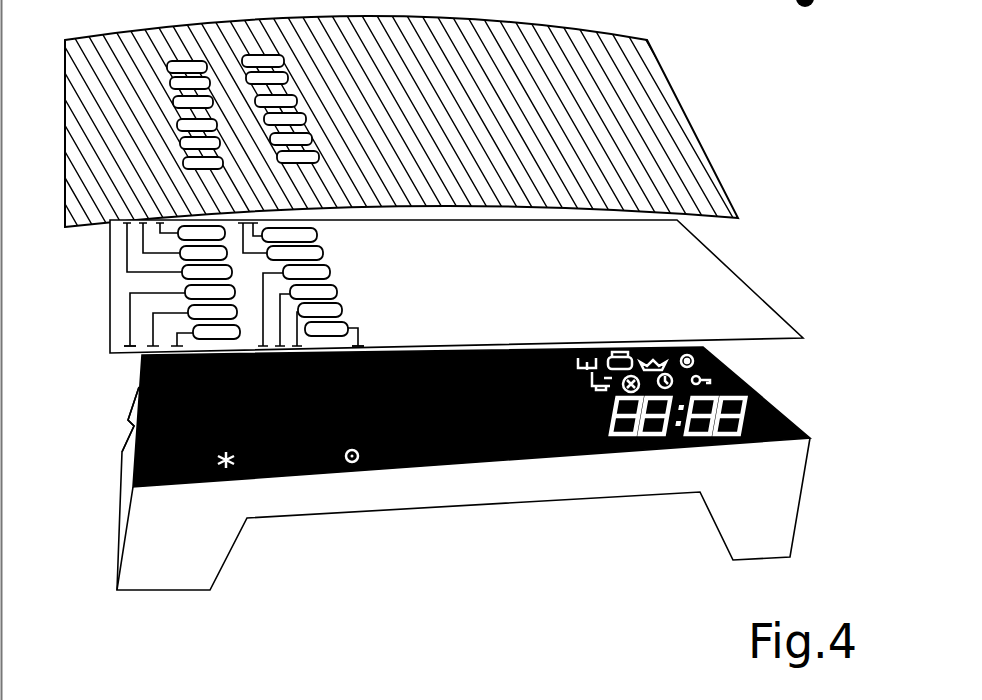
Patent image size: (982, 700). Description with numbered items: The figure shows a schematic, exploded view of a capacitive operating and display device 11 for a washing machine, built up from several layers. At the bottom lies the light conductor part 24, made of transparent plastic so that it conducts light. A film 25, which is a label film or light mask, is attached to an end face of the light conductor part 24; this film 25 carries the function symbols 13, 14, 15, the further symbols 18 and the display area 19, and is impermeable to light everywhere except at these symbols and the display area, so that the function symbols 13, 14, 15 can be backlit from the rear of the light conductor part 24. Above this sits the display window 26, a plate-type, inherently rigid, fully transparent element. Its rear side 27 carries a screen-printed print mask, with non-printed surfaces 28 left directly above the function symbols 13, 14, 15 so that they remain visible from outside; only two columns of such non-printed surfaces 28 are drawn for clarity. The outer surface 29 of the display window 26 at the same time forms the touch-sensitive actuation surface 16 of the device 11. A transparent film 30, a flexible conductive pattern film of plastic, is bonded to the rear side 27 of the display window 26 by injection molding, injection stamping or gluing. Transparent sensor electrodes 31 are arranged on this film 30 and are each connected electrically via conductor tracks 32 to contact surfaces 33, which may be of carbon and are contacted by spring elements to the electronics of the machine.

The capacitive operating and display device 11 is at (495, 401).
The function symbol 13 is at (229, 490).
The function symbol 14 is at (357, 483).
The function symbol 15 is at (492, 472).
The touch-sensitive actuation surface 16 is at (643, 78).
The further symbols 18 is at (725, 359).
The display area 19 is at (783, 404).
The light conductor part 24 is at (427, 497).
The film 25 is at (140, 402).
The display window 26 is at (672, 143).
The rear side 27 is at (730, 228).
The non-printed surfaces 28 is at (255, 58).
The outer surface 29 is at (430, 115).
The transparent film 30 is at (735, 305).
The sensor electrodes 31 is at (327, 293).
The conductor tracks 32 is at (128, 317).
The contact surfaces 33 is at (122, 355).